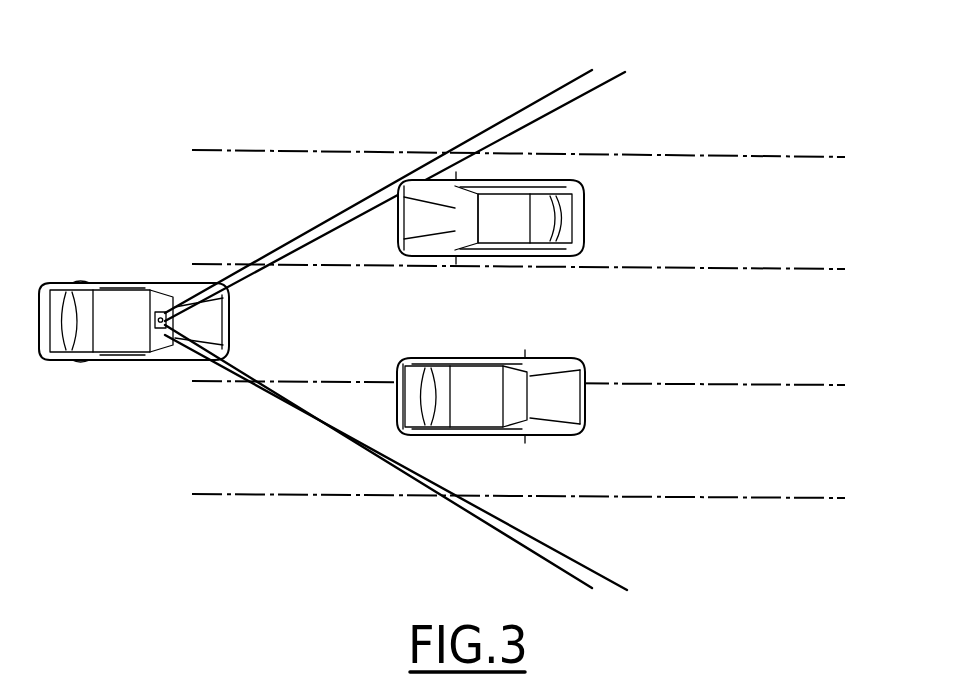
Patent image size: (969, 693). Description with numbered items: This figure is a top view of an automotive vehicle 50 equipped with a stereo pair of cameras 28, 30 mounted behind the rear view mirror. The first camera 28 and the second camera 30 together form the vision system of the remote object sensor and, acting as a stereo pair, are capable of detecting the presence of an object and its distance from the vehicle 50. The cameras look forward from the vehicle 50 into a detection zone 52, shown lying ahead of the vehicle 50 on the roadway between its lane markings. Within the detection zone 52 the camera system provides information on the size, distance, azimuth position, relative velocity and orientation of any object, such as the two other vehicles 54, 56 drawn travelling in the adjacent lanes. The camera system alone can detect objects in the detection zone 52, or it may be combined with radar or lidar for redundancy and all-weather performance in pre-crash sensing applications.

The first camera 28 is at (164, 297).
The second camera 30 is at (153, 360).
The vehicle 50 is at (163, 363).
The detection zone 52 is at (378, 314).
The target vehicle 54 is at (588, 224).
The target vehicle 56 is at (585, 398).